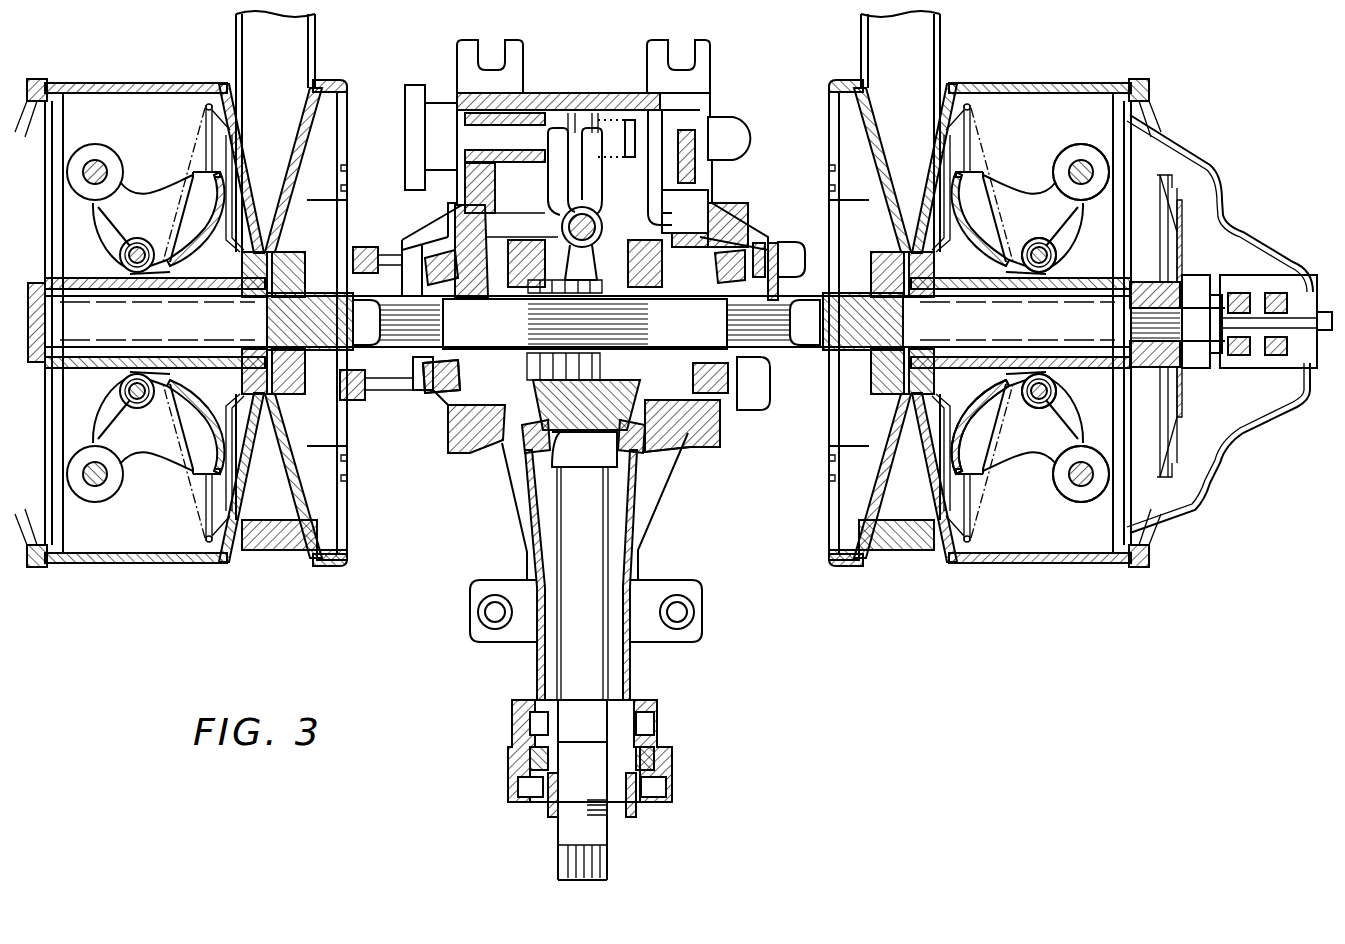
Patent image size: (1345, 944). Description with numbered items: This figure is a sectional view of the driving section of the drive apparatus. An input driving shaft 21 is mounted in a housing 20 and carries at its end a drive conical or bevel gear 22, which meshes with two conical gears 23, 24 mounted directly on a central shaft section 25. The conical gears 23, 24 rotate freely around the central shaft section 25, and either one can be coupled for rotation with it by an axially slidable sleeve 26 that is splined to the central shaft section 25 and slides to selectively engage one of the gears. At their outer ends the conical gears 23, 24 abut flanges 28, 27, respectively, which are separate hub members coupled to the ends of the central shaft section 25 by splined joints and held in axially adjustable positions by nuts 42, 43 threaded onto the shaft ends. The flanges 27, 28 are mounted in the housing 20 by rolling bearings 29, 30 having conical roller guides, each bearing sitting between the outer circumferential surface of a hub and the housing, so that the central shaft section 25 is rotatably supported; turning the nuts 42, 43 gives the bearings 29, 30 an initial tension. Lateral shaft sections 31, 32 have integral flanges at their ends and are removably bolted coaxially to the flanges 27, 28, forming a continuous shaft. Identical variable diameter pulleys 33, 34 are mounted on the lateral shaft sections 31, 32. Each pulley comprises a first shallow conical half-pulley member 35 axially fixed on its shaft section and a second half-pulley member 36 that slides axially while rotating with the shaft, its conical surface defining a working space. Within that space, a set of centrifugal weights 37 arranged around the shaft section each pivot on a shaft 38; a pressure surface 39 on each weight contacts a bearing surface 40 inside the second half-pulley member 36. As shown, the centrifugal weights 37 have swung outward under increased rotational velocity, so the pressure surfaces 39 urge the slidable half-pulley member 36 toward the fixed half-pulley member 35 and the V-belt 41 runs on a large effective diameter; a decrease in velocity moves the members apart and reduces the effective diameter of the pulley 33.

The housing 20 is at (677, 433).
The input driving shaft 21 is at (607, 687).
The drive conical or bevel gear 22 is at (612, 450).
The conical gear 23 is at (510, 395).
The conical gear 24 is at (698, 415).
The central shaft section 25 is at (705, 315).
The axially slidable sleeve 26 is at (620, 273).
The flange 27 is at (766, 233).
The flange 28 is at (408, 243).
The rolling bearing 29 is at (735, 395).
The rolling bearing 30 is at (440, 395).
The lateral shaft section 31 is at (847, 350).
The lateral shaft section 32 is at (317, 330).
The variable diameter pulley 33 is at (961, 86).
The variable diameter pulley 34 is at (182, 78).
The first half-pulley member 35 is at (842, 567).
The second half-pulley member 36 is at (1037, 562).
The centrifugal weight 37 is at (1082, 158).
The shaft 38 is at (1040, 246).
The pressure surface 39 is at (983, 350).
The bearing surface 40 is at (945, 553).
The V-belt 41 is at (283, 42).
The nut 42 is at (843, 287).
The nut 43 is at (330, 292).